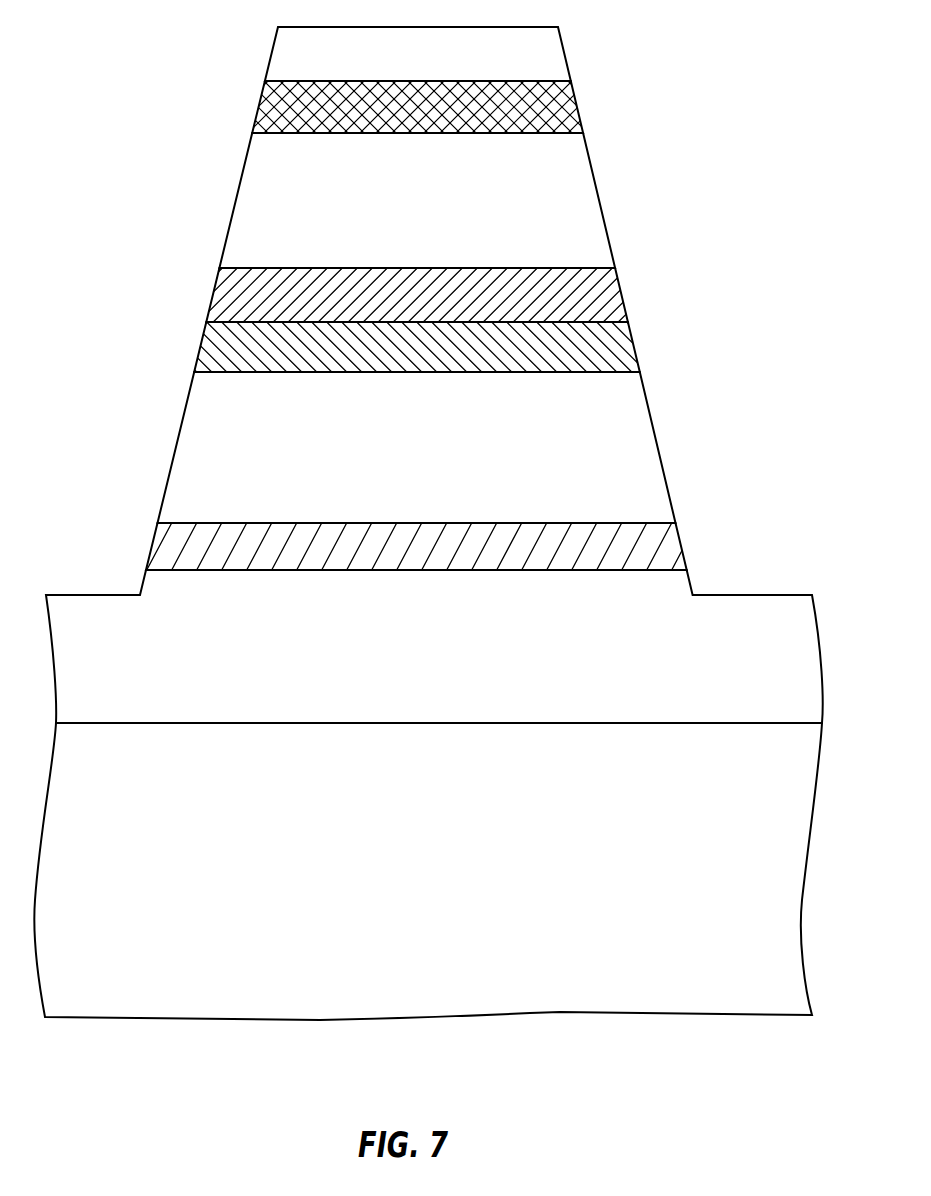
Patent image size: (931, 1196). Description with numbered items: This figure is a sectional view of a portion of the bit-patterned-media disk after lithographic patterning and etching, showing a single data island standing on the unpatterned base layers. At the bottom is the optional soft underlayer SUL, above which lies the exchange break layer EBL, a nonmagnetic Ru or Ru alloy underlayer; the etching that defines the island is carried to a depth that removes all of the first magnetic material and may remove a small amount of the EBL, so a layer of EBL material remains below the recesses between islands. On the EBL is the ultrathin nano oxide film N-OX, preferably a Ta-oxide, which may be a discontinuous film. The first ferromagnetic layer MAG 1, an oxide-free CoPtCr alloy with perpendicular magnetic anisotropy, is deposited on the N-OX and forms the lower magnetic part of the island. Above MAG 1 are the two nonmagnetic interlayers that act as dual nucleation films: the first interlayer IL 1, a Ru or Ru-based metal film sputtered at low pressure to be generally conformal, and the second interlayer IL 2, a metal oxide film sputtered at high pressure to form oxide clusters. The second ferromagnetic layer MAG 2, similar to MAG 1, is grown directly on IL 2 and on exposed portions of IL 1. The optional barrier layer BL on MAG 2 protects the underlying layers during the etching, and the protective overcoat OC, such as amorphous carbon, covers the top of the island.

The protective overcoat OC is at (418, 54).
The barrier layer BL is at (418, 107).
The second ferromagnetic layer MAG 2 is at (417, 200).
The second nonmagnetic interlayer IL 2 is at (412, 295).
The first nonmagnetic interlayer IL 1 is at (404, 347).
The first ferromagnetic layer MAG 1 is at (417, 447).
The nano oxide film N-OX is at (421, 547).
The exchange break layer EBL is at (434, 646).
The soft underlayer SUL is at (428, 871).